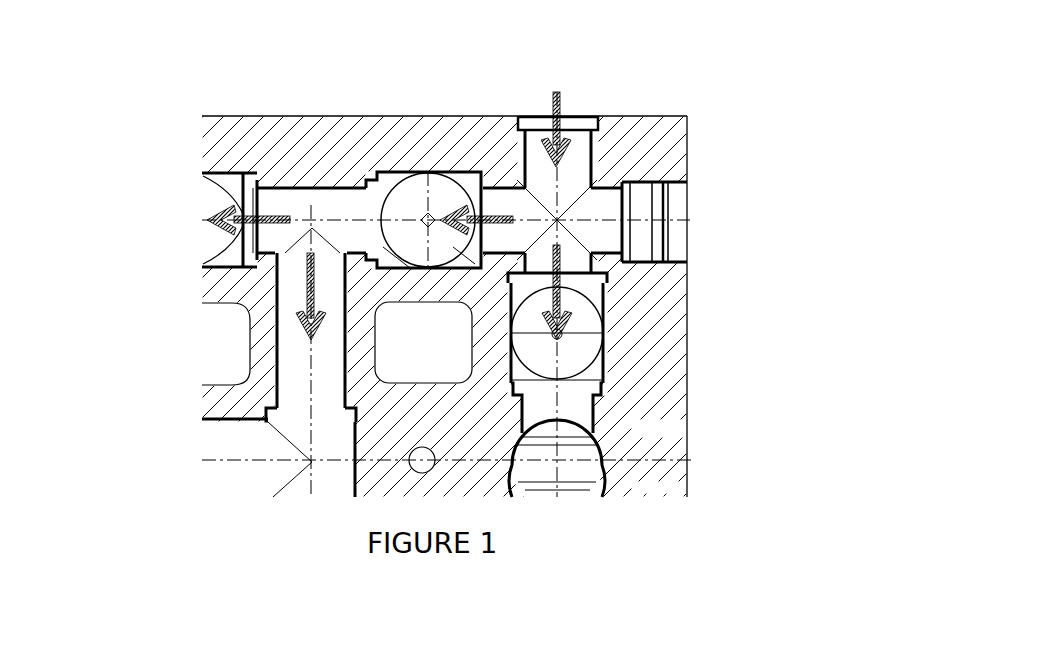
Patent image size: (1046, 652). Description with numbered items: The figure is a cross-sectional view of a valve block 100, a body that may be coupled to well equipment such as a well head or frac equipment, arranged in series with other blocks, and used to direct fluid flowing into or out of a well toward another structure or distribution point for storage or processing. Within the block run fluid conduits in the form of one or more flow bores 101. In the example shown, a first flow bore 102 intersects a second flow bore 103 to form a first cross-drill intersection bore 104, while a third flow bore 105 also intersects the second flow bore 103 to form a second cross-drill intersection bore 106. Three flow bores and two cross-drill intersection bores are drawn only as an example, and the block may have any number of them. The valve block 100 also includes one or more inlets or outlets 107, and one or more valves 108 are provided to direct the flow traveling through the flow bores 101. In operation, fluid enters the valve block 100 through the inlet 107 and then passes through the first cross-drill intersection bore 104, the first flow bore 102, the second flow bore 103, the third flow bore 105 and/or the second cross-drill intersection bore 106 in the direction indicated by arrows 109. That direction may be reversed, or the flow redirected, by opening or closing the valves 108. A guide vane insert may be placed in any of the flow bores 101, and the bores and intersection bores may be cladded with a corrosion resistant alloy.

The valve block 100 is at (180, 118).
The flow bores 101 is at (222, 483).
The first flow bore 102 is at (595, 407).
The second flow bore 103 is at (337, 187).
The first cross-drill intersection bore 104 is at (575, 212).
The third flow bore 105 is at (272, 342).
The second cross-drill intersection bore 106 is at (290, 246).
The inlet or outlet 107 is at (583, 117).
The valves 108 is at (392, 174).
The arrows 109 is at (268, 218).